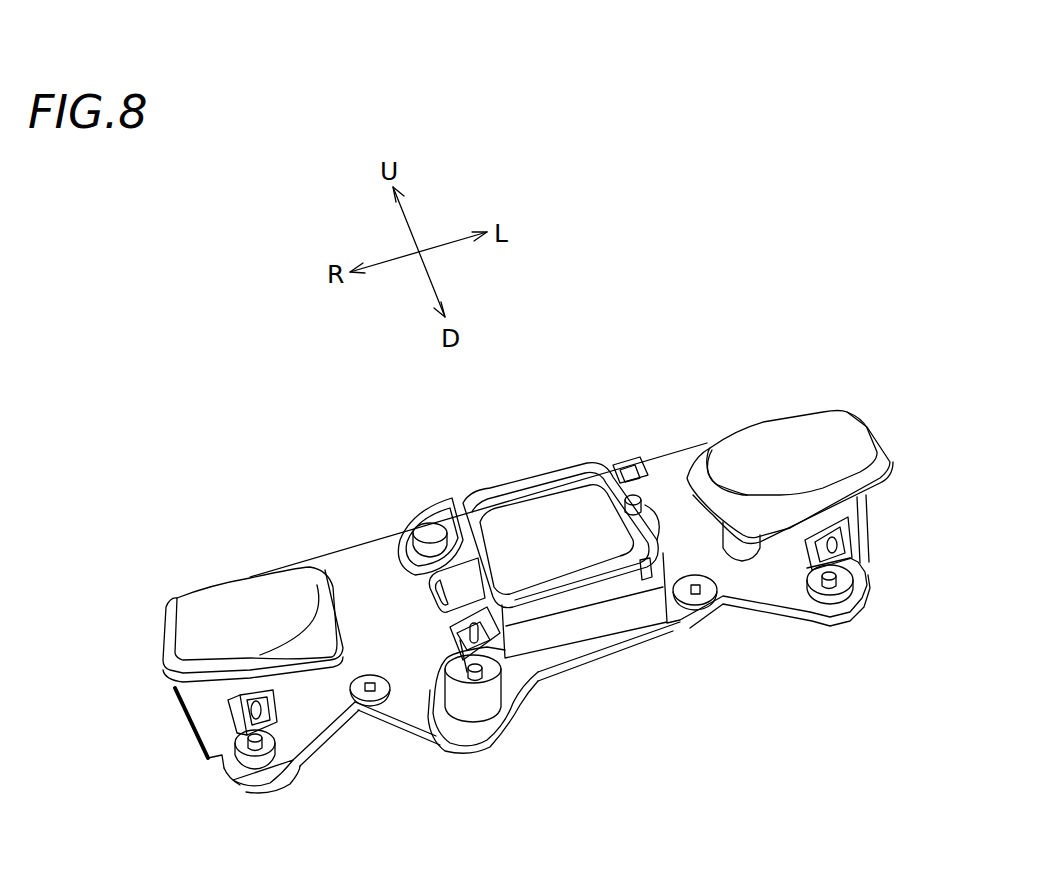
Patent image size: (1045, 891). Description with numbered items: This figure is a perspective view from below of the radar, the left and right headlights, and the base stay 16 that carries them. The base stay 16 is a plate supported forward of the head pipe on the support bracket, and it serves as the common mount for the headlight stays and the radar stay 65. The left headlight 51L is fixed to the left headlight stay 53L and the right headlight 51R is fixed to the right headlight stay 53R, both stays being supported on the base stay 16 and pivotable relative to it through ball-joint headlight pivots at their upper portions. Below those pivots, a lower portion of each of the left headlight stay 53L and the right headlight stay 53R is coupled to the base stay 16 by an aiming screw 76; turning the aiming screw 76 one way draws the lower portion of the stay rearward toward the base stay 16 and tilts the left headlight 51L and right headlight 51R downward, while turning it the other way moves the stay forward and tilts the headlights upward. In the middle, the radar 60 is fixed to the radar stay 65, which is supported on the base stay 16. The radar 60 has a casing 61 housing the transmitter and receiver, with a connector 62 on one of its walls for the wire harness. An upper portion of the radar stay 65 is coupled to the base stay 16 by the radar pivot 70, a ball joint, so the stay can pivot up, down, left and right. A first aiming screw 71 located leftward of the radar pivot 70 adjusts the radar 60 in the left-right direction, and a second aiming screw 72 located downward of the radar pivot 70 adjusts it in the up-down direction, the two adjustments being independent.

The base stay 16 is at (337, 563).
The right headlight 51R is at (250, 593).
The left headlight 51L is at (782, 430).
The right headlight stay 53R is at (177, 690).
The left headlight stay 53L is at (890, 480).
The radar 60 is at (509, 582).
The casing 61 is at (542, 518).
The connector 62 is at (410, 588).
The radar stay 65 is at (578, 632).
The radar pivot 70 is at (430, 535).
The first aiming screw 71 is at (628, 465).
The second aiming screw 72 is at (435, 660).
The aiming screw 76 is at (283, 723).